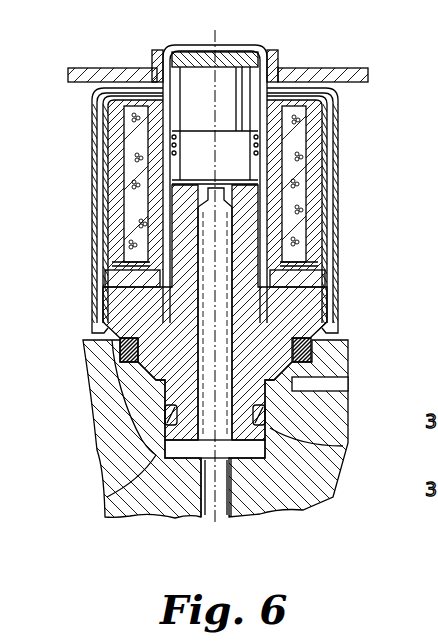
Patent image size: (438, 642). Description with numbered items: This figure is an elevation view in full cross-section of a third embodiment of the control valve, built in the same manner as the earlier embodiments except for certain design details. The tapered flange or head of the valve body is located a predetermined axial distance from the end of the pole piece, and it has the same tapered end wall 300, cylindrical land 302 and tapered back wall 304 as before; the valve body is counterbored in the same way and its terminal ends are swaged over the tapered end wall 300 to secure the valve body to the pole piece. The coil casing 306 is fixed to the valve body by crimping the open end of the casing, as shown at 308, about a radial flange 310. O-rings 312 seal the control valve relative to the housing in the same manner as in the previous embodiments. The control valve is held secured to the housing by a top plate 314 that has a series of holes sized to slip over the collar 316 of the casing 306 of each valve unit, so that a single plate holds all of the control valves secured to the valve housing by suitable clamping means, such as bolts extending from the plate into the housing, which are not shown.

The tapered end wall 300 is at (350, 385).
The cylindrical land 302 is at (107, 497).
The tapered back wall 304 is at (343, 446).
The coil casing 306 is at (95, 133).
The crimp of casing open end 308 is at (104, 333).
The radial flange 310 is at (120, 340).
The O-rings 312 is at (165, 415).
The top plate 314 is at (366, 76).
The collar 316 is at (277, 50).